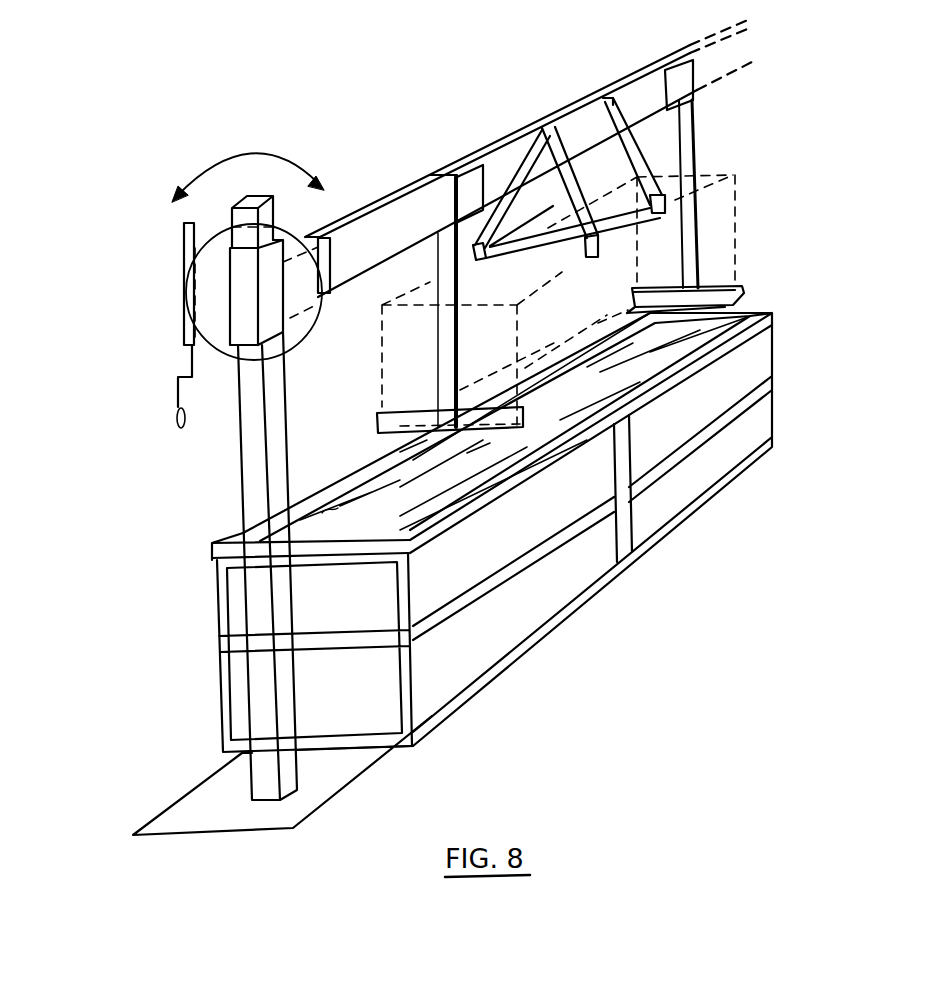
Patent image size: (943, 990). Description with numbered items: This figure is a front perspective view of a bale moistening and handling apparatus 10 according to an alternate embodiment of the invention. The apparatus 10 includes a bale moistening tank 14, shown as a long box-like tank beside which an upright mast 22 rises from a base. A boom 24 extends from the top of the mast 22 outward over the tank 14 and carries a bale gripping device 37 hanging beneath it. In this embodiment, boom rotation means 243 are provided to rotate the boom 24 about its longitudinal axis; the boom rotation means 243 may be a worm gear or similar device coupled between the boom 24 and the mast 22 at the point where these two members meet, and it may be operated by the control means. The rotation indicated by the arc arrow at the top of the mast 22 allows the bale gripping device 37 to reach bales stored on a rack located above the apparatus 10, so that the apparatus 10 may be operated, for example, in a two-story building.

The bale moistening and handling apparatus 10 is at (449, 427).
The bale moistening tank 14 is at (552, 632).
The mast 22 is at (250, 479).
The boom 24 is at (632, 82).
The bale gripping device 37 is at (653, 155).
The boom rotation means 243 is at (145, 300).